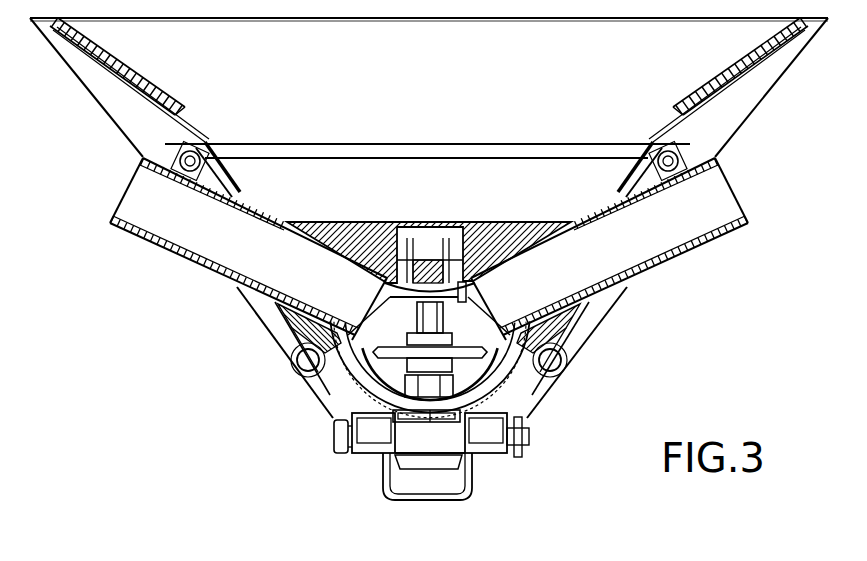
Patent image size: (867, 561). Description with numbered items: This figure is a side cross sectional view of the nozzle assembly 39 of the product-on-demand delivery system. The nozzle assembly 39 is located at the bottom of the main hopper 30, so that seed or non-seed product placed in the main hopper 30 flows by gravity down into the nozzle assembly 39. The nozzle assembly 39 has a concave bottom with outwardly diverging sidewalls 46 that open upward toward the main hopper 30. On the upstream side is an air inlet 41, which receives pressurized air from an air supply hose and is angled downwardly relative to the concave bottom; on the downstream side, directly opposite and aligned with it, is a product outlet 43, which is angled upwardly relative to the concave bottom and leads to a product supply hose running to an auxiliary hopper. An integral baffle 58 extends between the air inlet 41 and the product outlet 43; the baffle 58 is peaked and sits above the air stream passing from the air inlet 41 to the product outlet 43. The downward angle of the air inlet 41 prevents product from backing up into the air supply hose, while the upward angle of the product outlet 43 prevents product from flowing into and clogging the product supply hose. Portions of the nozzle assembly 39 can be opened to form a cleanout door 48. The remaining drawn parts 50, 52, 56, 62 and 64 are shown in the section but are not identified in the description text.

The main hopper 30 is at (416, 93).
The nozzle assembly 39 is at (190, 381).
The air inlet 41 is at (672, 256).
The product outlet 43 is at (178, 240).
The outwardly diverging sidewall 46 is at (199, 148).
The cleanout door 48 is at (386, 430).
The pin 50 is at (342, 456).
The bracket 52 is at (426, 480).
The pivot 56 is at (322, 400).
The baffle 58 is at (421, 222).
The plate 62 is at (708, 196).
The spacer 64 is at (468, 298).